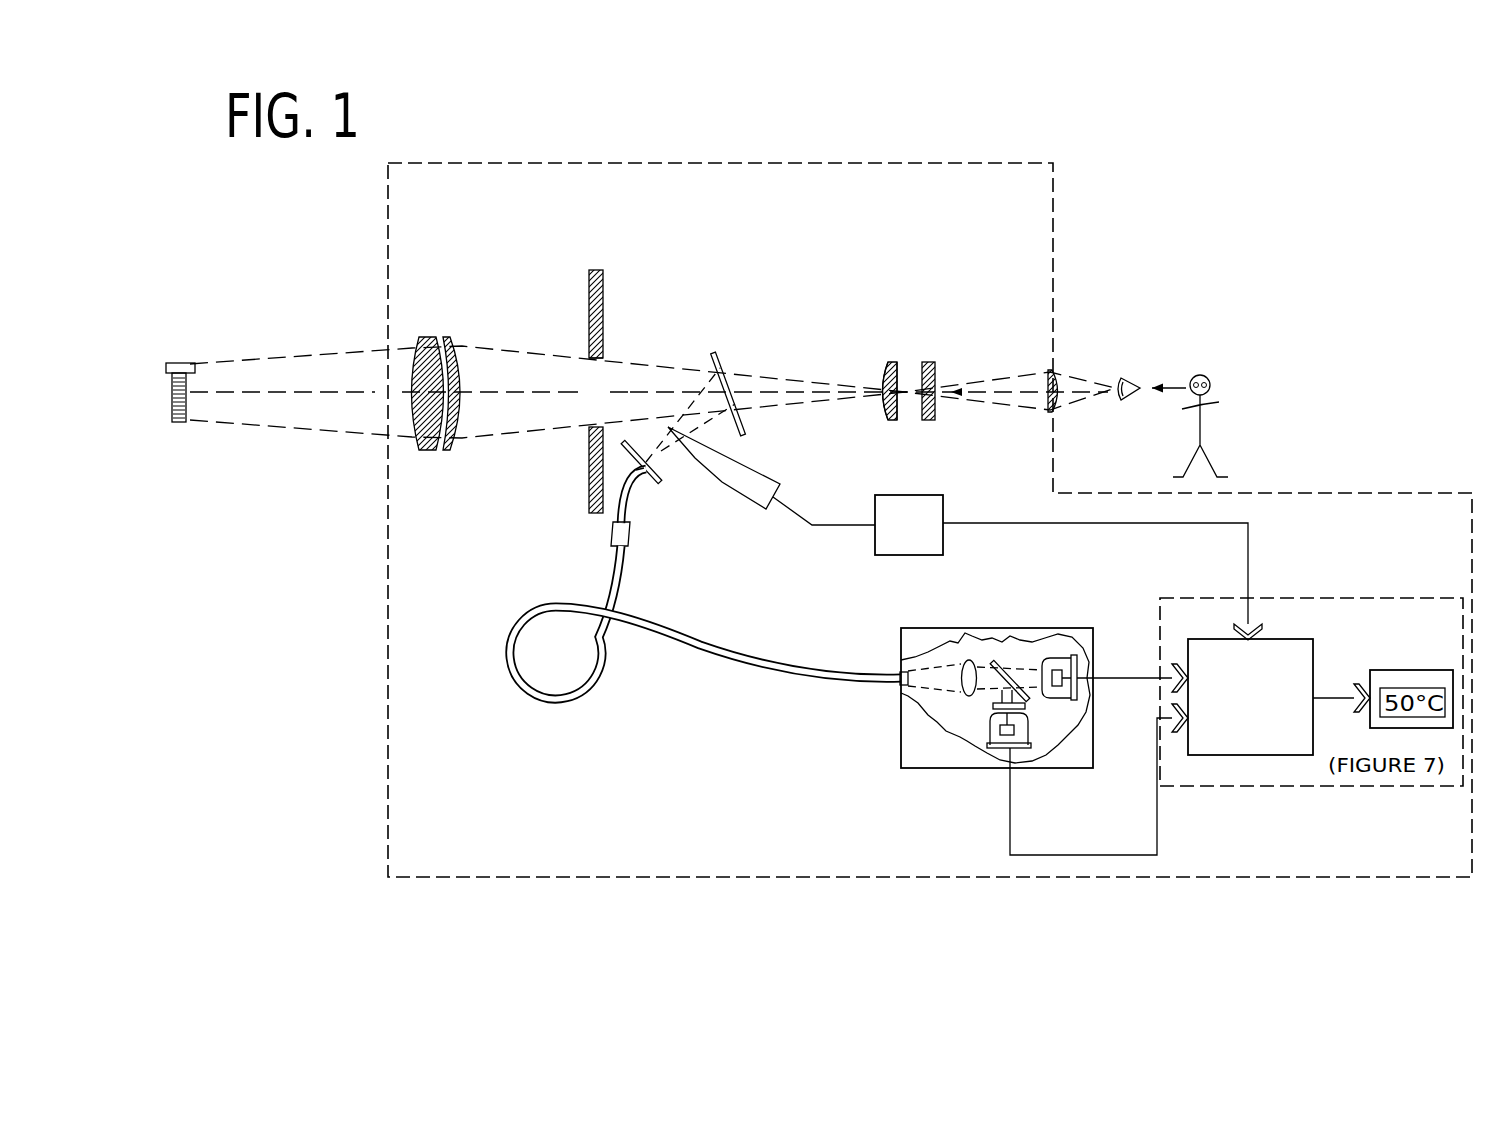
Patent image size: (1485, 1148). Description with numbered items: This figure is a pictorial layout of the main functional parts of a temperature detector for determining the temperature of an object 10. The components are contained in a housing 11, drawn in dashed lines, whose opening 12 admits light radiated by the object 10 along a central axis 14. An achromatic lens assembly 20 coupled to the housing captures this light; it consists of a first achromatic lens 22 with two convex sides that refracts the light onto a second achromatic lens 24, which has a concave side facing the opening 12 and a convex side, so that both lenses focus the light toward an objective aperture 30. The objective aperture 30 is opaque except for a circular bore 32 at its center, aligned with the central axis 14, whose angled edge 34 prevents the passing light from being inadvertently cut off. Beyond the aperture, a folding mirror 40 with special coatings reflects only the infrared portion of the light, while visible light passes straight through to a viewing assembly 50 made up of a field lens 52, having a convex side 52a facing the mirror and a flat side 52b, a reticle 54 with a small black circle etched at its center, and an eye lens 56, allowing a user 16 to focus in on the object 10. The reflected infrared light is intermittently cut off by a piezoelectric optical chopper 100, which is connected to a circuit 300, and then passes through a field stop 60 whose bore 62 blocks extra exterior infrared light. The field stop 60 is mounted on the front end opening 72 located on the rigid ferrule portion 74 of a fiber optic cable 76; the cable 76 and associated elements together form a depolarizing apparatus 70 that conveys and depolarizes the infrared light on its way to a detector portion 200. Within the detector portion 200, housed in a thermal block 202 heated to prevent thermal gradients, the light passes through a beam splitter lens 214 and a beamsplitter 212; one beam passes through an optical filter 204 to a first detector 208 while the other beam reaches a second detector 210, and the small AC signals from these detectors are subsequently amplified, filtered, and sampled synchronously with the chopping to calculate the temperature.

The object 10 is at (178, 362).
The housing 11 is at (1055, 205).
The opening of the housing 12 is at (649, 392).
The central axis 14 is at (247, 397).
The user 16 is at (1205, 421).
The achromatic lens assembly 20 is at (457, 348).
The first achromatic lens 22 is at (420, 450).
The second achromatic lens 24 is at (460, 450).
The objective aperture 30 is at (618, 371).
The circular bore 32 is at (595, 392).
The angled edge 34 is at (606, 355).
The folding mirror 40 is at (722, 350).
The viewing assembly 50 is at (954, 362).
The field lens 52 is at (899, 402).
The convex side 52a is at (877, 378).
The flat side 52b is at (899, 409).
The reticle 54 is at (934, 421).
The eye lens 56 is at (1057, 413).
The field stop 60 is at (676, 499).
The bore 62 is at (648, 463).
The depolarizing apparatus 70 is at (582, 698).
The front end opening 72 is at (641, 472).
The rigid ferrule portion 74 is at (631, 518).
The fiber optic cable 76 is at (673, 637).
The piezoelectric optical chopper 100 is at (758, 467).
The detector portion 200 is at (979, 708).
The thermal block 202 is at (898, 727).
The optical filter 204 is at (984, 720).
The first detector 208 is at (1021, 779).
The second detector 210 is at (1067, 703).
The beamsplitter 212 is at (1000, 653).
The beam splitter lens 214 is at (969, 649).
The circuit 300 is at (946, 501).